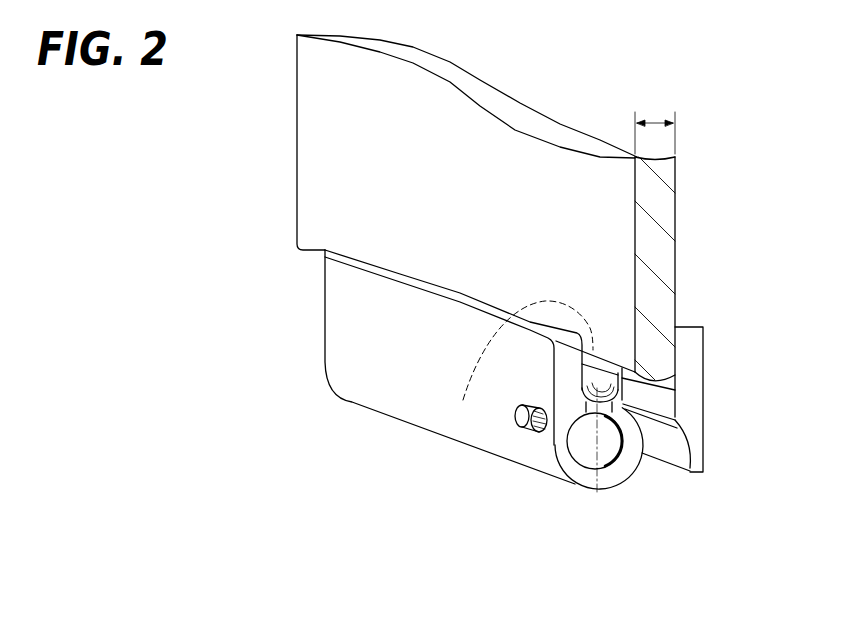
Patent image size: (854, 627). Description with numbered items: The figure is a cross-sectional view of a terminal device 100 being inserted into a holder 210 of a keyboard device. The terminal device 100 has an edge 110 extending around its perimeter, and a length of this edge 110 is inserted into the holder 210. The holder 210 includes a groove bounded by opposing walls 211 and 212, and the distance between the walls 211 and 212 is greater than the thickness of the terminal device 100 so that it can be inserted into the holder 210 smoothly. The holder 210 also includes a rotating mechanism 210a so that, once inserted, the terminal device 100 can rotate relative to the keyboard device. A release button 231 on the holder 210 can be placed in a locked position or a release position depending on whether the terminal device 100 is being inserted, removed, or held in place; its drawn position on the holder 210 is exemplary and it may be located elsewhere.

The terminal device 100 is at (661, 244).
The edge 110 is at (685, 327).
The wall 211 is at (626, 380).
The holder 210 is at (337, 334).
The rotating mechanism 210a is at (607, 450).
The wall 212 is at (463, 400).
The release button 231 is at (524, 426).